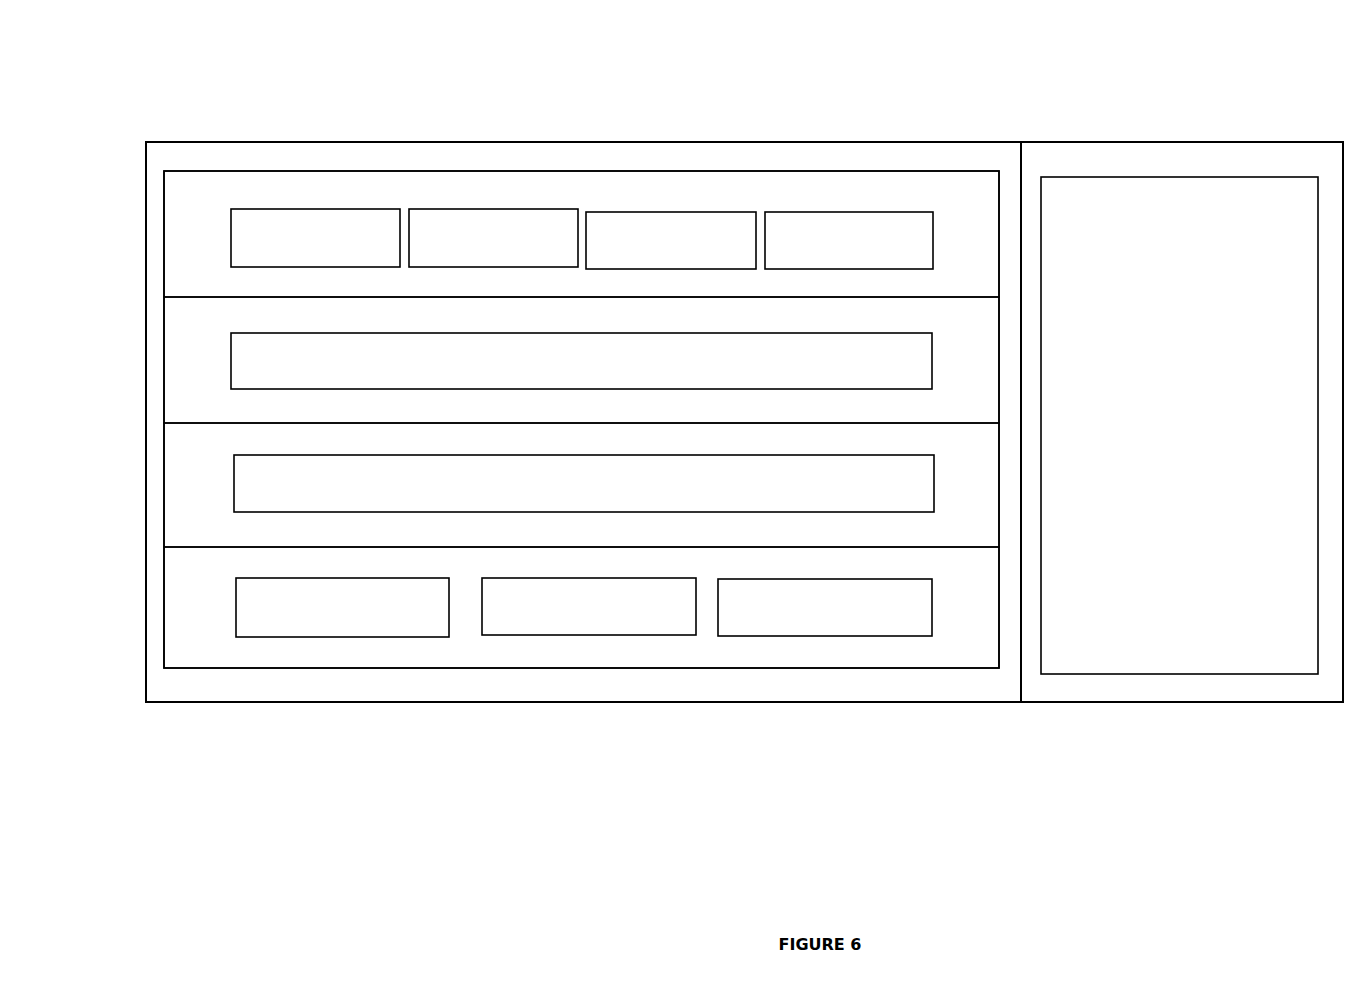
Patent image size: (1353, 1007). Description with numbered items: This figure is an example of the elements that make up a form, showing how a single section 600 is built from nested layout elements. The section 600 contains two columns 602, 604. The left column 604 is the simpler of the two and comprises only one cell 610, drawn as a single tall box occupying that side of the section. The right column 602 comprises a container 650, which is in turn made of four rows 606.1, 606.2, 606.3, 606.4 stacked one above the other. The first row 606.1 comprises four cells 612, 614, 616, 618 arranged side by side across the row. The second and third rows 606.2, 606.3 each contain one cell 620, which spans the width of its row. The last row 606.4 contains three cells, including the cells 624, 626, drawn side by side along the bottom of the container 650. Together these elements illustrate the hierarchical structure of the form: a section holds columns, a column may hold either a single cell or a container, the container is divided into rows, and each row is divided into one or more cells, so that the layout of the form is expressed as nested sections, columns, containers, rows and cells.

The section 600 is at (198, 102).
The right column 602 is at (735, 702).
The left column 604 is at (1252, 702).
The first row 606.1 is at (165, 267).
The second row 606.2 is at (162, 377).
The third row 606.3 is at (163, 498).
The last row 606.4 is at (165, 622).
The cell 610 is at (1192, 674).
The cell 612 is at (321, 209).
The cell 614 is at (498, 209).
The cell 616 is at (675, 212).
The cell 618 is at (853, 212).
The cell 620 is at (231, 347).
The cell 624 is at (592, 635).
The cell 626 is at (870, 636).
The container 650 is at (316, 637).